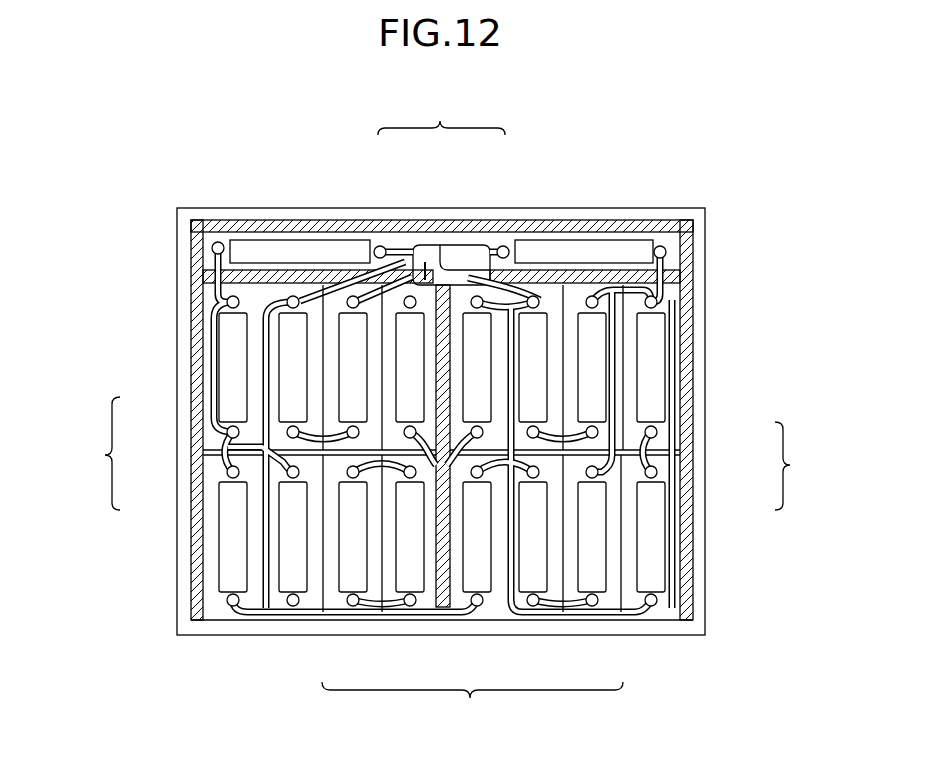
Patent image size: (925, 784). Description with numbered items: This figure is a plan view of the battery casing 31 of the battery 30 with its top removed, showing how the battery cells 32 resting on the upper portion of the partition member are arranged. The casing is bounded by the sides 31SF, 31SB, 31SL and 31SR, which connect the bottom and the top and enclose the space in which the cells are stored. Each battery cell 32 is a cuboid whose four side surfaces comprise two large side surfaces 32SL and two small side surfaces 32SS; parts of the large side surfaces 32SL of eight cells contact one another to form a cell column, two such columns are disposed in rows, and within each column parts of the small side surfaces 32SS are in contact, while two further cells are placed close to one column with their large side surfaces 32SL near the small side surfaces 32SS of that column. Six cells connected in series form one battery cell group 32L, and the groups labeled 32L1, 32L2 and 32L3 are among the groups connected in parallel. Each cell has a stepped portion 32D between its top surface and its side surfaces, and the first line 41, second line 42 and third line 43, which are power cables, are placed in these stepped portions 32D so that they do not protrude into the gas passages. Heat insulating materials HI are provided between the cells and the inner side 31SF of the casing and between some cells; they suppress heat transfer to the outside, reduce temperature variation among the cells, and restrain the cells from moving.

The battery 30 is at (683, 176).
The battery casing 31 is at (469, 372).
The side 31SL is at (185, 343).
The side 31SR is at (693, 521).
The side 31SF is at (545, 268).
The side 31SB is at (661, 632).
The battery cell 32 is at (365, 232).
The battery cell group 32L is at (442, 411).
The first cell row 32L1 is at (472, 740).
The second cell row 32L2 is at (343, 353).
The third cell row 32L3 is at (442, 293).
The small side surface 32SS is at (290, 415).
The large side surface 32SL is at (319, 322).
The stepped portion 32D is at (360, 580).
The first line 41 is at (420, 258).
The second line 42 is at (455, 250).
The third line 43 is at (212, 251).
The heat insulating material HI is at (235, 224).